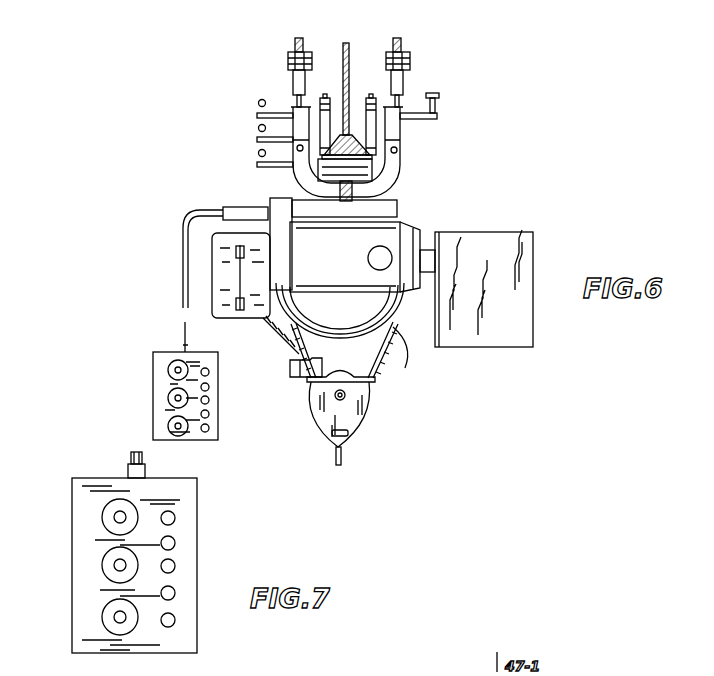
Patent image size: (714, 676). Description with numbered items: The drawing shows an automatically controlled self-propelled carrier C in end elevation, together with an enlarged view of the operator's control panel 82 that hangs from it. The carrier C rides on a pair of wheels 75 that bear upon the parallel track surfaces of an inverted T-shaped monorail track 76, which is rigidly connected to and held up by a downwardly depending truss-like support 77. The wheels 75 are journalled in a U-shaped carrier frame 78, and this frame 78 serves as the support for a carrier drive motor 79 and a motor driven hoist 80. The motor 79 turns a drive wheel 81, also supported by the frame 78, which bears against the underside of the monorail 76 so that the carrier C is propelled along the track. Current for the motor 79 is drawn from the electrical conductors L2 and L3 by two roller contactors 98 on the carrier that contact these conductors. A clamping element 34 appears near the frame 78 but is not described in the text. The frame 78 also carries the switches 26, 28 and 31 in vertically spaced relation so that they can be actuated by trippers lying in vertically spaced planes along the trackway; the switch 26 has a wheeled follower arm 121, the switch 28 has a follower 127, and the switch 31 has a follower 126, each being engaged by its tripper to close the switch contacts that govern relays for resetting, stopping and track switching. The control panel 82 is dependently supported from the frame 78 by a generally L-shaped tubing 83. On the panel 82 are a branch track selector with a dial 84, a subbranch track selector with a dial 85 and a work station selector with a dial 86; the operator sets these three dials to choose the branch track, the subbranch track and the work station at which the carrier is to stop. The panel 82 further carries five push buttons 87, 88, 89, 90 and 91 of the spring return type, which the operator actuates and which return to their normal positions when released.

In FIG. 6, the self-propelled carrier C is at (423, 159).
In FIG. 6, the switch 26 is at (257, 114).
In FIG. 6, the switch 28 is at (257, 140).
In FIG. 6, the switch 31 is at (257, 164).
In FIG. 6, the wheeled follower arm 121 is at (259, 101).
In FIG. 6, the follower 127 is at (259, 127).
In FIG. 6, the follower 126 is at (259, 153).
In FIG. 6, the U-shaped carrier frame 78 is at (392, 128).
In FIG. 6, the clamping bolt 34 is at (433, 93).
In FIG. 6, the truss-like support 77 is at (349, 58).
In FIG. 6, the monorail track 76 is at (362, 143).
In FIG. 6, the drive wheel 81 is at (365, 172).
In FIG. 6, the wheels 75 is at (326, 98).
In FIG. 6, the electrical conductor L2 is at (298, 38).
In FIG. 6, the electrical conductor L3 is at (398, 38).
In FIG. 6, the roller contactors 98 is at (288, 64).
In FIG. 6, the carrier drive motor 79 is at (350, 256).
In FIG. 6, the L-shaped tubing 83 is at (183, 262).
In FIG. 7, the L-shaped tubing 83 is at (128, 466).
In FIG. 6, the motor driven hoist 80 is at (411, 355).
In FIG. 6, the control panel 82 is at (147, 394).
In FIG. 7, the control panel 82 is at (65, 583).
In FIG. 6, the dial 84 is at (168, 366).
In FIG. 7, the dial 84 is at (102, 512).
In FIG. 6, the dial 85 is at (168, 394).
In FIG. 7, the dial 85 is at (102, 562).
In FIG. 6, the dial 86 is at (168, 424).
In FIG. 7, the dial 86 is at (102, 614).
In FIG. 6, the push button 87 is at (209, 371).
In FIG. 7, the push button 87 is at (175, 516).
In FIG. 6, the push button 88 is at (209, 387).
In FIG. 7, the push button 88 is at (175, 542).
In FIG. 6, the push button 89 is at (209, 400).
In FIG. 7, the push button 89 is at (175, 566).
In FIG. 6, the push button 90 is at (209, 414).
In FIG. 7, the push button 90 is at (175, 592).
In FIG. 6, the push button 91 is at (209, 428).
In FIG. 7, the push button 91 is at (175, 619).